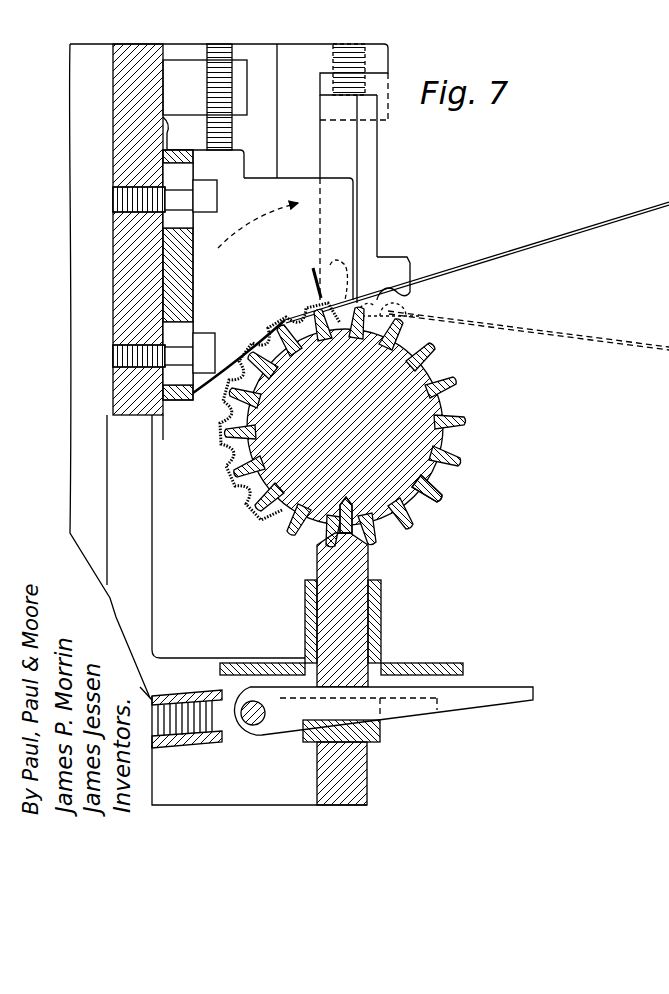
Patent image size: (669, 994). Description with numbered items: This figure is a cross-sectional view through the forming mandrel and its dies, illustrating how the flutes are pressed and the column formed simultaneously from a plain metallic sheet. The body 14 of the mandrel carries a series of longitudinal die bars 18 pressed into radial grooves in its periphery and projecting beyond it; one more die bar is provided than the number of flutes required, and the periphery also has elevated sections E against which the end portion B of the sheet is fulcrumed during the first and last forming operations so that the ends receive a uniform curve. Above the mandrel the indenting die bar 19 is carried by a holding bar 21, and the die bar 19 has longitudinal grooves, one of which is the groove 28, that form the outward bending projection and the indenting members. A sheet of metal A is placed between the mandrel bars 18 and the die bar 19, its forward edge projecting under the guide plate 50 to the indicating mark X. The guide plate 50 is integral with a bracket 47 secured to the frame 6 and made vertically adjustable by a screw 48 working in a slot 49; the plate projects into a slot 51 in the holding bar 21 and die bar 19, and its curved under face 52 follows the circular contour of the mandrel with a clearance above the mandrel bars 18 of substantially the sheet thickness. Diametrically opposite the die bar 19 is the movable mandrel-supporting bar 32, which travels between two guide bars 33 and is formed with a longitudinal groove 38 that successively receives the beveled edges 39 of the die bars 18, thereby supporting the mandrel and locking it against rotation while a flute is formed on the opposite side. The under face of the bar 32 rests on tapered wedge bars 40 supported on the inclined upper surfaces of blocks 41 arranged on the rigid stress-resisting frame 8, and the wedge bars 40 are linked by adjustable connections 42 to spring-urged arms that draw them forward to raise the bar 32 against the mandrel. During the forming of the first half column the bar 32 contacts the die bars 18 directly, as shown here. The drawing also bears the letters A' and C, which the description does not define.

The frame 6 is at (78, 338).
The stress-resisting frame 8 is at (358, 777).
The mandrel body 14 is at (412, 405).
The die bars 18 is at (357, 427).
The indenting die bar 19 is at (388, 260).
The holding bar 21 is at (378, 130).
The longitudinal groove 28 is at (405, 311).
The mandrel-supporting bar 32 is at (357, 564).
The guide bars 33 is at (305, 615).
The longitudinal groove 38 is at (368, 540).
The beveled edges 39 is at (430, 502).
The wedge bars 40 is at (393, 707).
The blocks 41 is at (384, 737).
The adjustable connections 42 is at (210, 740).
The brackets 47 is at (183, 258).
The screws 48 is at (212, 197).
The slots 49 is at (178, 217).
The guide plates 50 is at (340, 218).
The slots 51 is at (362, 168).
The curved under faces 52 is at (292, 316).
The sheet of metal A is at (477, 262).
The sheet alternate position A' is at (528, 325).
The end portion of sheet B is at (278, 505).
The point C is at (369, 350).
The elevated sections E is at (290, 513).
The indicating mark X is at (311, 290).